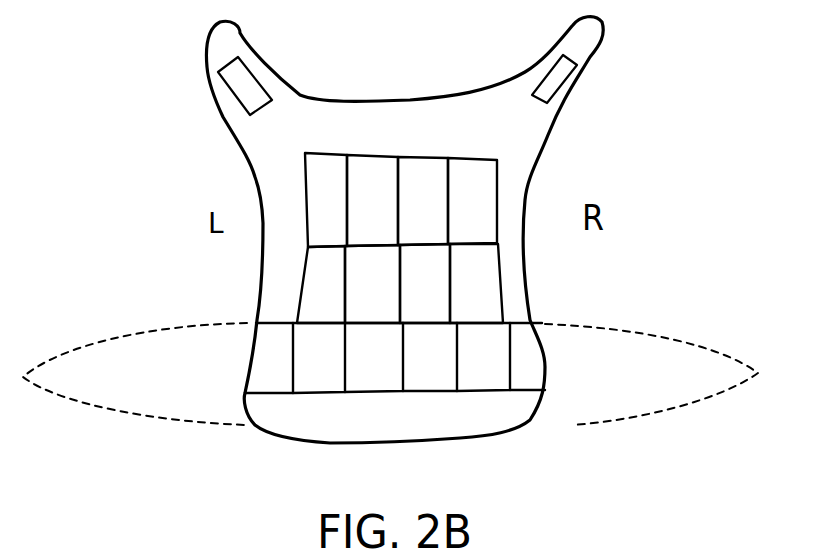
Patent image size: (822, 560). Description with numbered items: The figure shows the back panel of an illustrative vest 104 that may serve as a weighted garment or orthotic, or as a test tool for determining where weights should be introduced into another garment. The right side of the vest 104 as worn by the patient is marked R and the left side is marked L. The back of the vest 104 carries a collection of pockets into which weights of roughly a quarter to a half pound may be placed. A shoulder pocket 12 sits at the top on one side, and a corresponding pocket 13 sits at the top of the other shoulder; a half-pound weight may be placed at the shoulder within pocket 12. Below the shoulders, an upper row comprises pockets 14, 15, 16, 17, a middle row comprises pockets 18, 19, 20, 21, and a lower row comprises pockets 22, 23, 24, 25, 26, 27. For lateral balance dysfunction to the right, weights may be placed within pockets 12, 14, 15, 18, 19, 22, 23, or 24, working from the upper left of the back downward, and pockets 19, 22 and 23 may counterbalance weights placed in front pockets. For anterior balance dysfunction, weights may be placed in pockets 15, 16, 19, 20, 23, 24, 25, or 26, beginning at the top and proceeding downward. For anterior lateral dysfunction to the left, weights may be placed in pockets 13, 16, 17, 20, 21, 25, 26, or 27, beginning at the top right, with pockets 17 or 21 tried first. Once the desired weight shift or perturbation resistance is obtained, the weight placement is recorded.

The vest 104 is at (633, 83).
The pocket 12 is at (245, 86).
The pocket 13 is at (554, 79).
The pocket 14 is at (326, 200).
The pocket 15 is at (372, 200).
The pocket 16 is at (423, 201).
The pocket 17 is at (472, 201).
The pocket 18 is at (321, 284).
The pocket 19 is at (372, 284).
The pocket 20 is at (425, 283).
The pocket 21 is at (476, 283).
The pocket 22 is at (269, 358).
The pocket 23 is at (319, 358).
The pocket 24 is at (374, 357).
The pocket 25 is at (430, 357).
The pocket 26 is at (483, 357).
The pocket 27 is at (527, 356).